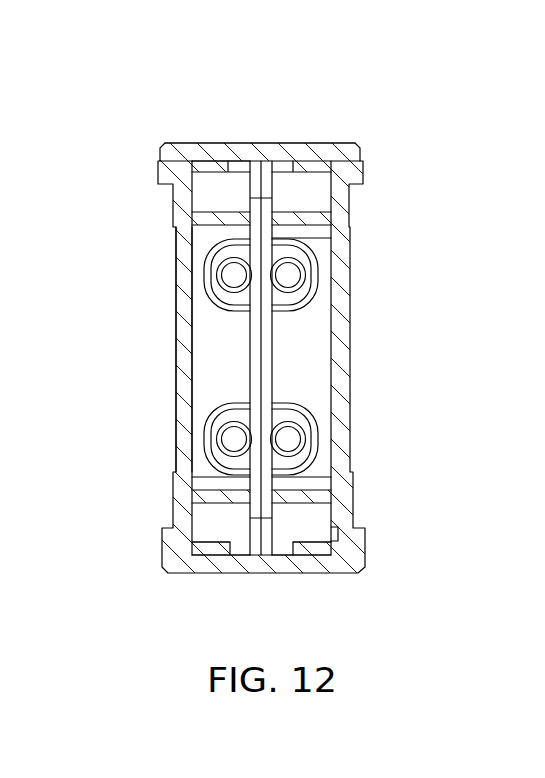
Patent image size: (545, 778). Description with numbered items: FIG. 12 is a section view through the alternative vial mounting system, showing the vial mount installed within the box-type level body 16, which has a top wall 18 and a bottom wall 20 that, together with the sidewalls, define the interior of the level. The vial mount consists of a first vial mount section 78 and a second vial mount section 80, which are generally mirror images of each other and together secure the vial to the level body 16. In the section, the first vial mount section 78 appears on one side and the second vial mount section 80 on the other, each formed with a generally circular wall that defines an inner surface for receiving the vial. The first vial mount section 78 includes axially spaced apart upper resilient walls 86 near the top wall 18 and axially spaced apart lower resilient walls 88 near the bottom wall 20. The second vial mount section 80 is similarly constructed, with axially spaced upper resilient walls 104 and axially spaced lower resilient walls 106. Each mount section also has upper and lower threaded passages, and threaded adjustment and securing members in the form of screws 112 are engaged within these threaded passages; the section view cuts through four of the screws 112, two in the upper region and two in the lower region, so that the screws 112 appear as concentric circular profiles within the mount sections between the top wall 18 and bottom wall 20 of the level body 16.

The level body 16 is at (347, 142).
The top wall 18 is at (258, 143).
The bottom wall 20 is at (258, 574).
The first vial mount section 78 is at (192, 343).
The second vial mount section 80 is at (337, 305).
The upper resilient walls 86 is at (210, 143).
The lower resilient walls 88 is at (210, 552).
The upper resilient walls 104 is at (310, 143).
The lower resilient walls 106 is at (312, 555).
The screws 112 is at (215, 274).